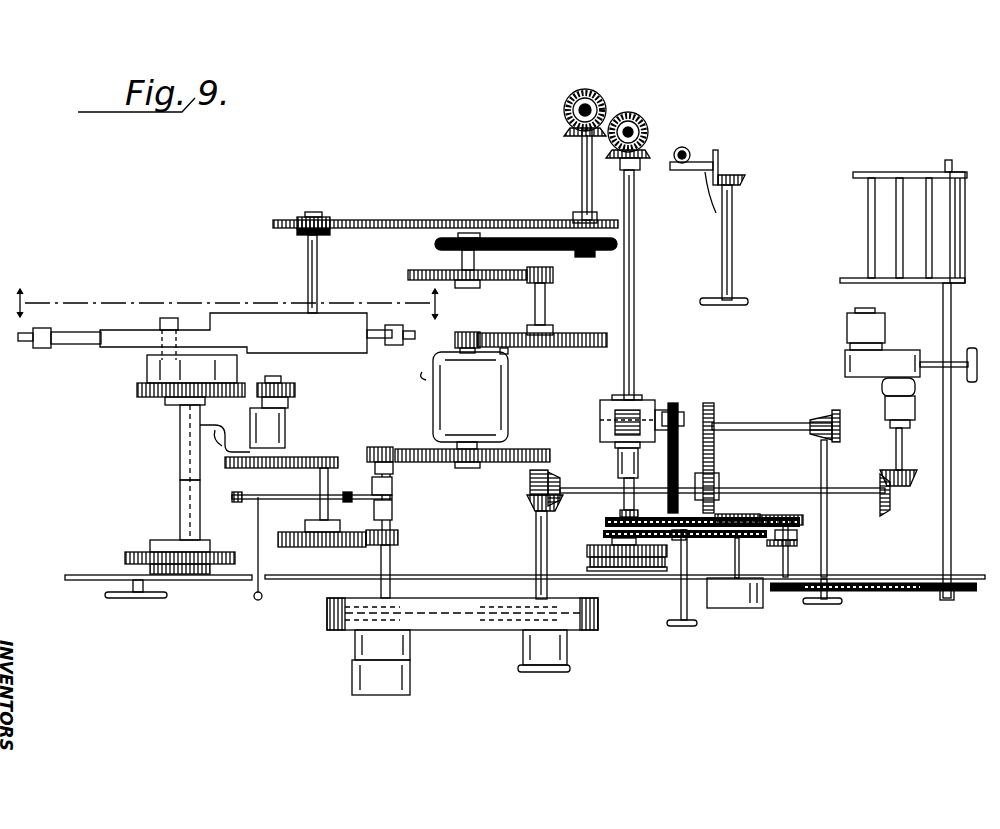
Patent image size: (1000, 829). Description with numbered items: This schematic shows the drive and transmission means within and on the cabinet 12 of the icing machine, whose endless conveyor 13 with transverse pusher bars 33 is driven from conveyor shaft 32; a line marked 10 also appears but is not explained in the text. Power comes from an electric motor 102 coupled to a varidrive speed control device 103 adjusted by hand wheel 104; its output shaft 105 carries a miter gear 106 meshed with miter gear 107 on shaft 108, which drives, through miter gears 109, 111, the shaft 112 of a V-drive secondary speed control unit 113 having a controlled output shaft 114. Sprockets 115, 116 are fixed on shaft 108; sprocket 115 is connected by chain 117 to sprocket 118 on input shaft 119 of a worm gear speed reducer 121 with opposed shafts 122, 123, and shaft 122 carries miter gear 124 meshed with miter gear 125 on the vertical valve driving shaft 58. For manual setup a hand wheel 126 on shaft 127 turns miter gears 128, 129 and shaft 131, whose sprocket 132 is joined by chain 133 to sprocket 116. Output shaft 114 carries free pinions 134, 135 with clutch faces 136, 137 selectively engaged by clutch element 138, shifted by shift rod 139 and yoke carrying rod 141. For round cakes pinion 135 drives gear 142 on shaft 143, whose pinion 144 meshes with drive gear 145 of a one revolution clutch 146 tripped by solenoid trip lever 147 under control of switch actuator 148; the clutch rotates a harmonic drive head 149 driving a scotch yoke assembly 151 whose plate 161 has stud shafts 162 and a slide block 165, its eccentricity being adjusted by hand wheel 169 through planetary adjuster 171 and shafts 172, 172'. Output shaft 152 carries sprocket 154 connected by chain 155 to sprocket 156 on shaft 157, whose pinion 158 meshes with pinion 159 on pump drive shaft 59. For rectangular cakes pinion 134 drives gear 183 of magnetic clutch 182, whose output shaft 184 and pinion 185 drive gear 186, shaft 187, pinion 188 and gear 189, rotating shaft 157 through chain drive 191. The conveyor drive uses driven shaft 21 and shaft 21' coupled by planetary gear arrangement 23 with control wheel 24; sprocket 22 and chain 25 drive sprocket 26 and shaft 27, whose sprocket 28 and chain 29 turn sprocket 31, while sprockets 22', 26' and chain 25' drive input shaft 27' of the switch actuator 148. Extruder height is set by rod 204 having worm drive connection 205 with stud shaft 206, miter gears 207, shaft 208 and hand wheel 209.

The datum axis arrows 10 is at (235, 304).
The cabinet 12 is at (78, 581).
The endless conveyor 13 is at (896, 210).
The driven shaft 21 is at (680, 523).
The shaft 21' is at (642, 502).
The sprocket 22 is at (661, 545).
The sprocket 22' is at (651, 541).
The planetary drive assembly 23 is at (635, 571).
The control wheel 24 is at (680, 626).
The endless chain 25 is at (737, 507).
The chain 25' is at (696, 542).
The sprocket 26 is at (781, 510).
The sprocket 26' is at (767, 544).
The shaft 27 is at (772, 551).
The input shaft 27' is at (717, 558).
The sprocket 28 is at (780, 595).
The endless chain 29 is at (880, 595).
The sprocket 31 is at (935, 595).
The conveyor shaft 32 is at (951, 490).
The pusher bars 33 is at (896, 220).
The valve driving shaft 58 is at (636, 118).
The pump drive shaft 59 is at (590, 95).
The electric motor 102 is at (847, 328).
The speed control device 103 is at (845, 365).
The hand wheel 104 is at (972, 348).
The output shaft 105 is at (896, 447).
The miter gear 106 is at (900, 486).
The miter gear 107 is at (882, 506).
The shaft 108 is at (790, 478).
The miter gear 109 is at (548, 485).
The miter gear 111 is at (527, 495).
The shaft 112 is at (536, 550).
The secondary speed control unit 113 is at (478, 638).
The output shaft 114 is at (390, 568).
The sprocket 115 is at (676, 485).
The sprocket 116 is at (719, 480).
The chain 117 is at (676, 400).
The sprocket 118 is at (665, 405).
The input shaft 119 is at (685, 415).
The worm gear speed reducer 121 is at (600, 410).
The shaft 122 is at (634, 330).
The shaft 123 is at (618, 457).
The miter gear 124 is at (640, 168).
The miter gear 125 is at (648, 145).
The hand wheel 126 is at (825, 605).
The shaft 127 is at (821, 445).
The miter gear 128 is at (815, 428).
The miter gear 129 is at (843, 410).
The shaft 131 is at (740, 423).
The sprocket 132 is at (713, 405).
The chain 133 is at (714, 446).
The pinion 134 is at (378, 447).
The pinion 135 is at (398, 537).
The clutch face 136 is at (374, 468).
The clutch face 137 is at (392, 518).
The clutch element 138 is at (392, 488).
The shift rod 139 is at (254, 596).
The yoke carrying rod 141 is at (292, 497).
The gear 142 is at (335, 547).
The shaft 143 is at (320, 512).
The pinion 144 is at (324, 457).
The drive gear 145 is at (298, 455).
The one revolution clutch 146 is at (285, 412).
The trip lever 147 is at (190, 445).
The switch actuator 148 is at (745, 608).
The harmonic drive head 149 is at (140, 395).
The scotch yoke assembly 151 is at (233, 308).
The output shaft 152 is at (316, 272).
The sprocket 154 is at (303, 215).
The chain 155 is at (385, 218).
The sprocket 156 is at (573, 215).
The shaft 157 is at (582, 168).
The pinion 158 is at (566, 132).
The pinion 159 is at (566, 102).
The plate 161 is at (328, 342).
The stud shafts 162 is at (63, 345).
The slide block 165 is at (162, 318).
The hand wheel 169 is at (140, 598).
The planetary adjuster 171 is at (150, 548).
The shaft 172 is at (160, 472).
The shaft 172' is at (213, 510).
The magnetic clutch 182 is at (480, 410).
The gear 183 is at (510, 449).
The output shaft 184 is at (465, 332).
The pinion 185 is at (458, 350).
The gear 186 is at (560, 347).
The shaft 187 is at (545, 305).
The pinion 188 is at (553, 275).
The gear 189 is at (410, 280).
The chain drive 191 is at (520, 238).
The rod 204 is at (690, 150).
The worm drive connection 205 is at (685, 171).
The stud shaft 206 is at (712, 206).
The miter gears 207 is at (745, 175).
The shaft 208 is at (732, 240).
The hand wheel 209 is at (745, 299).